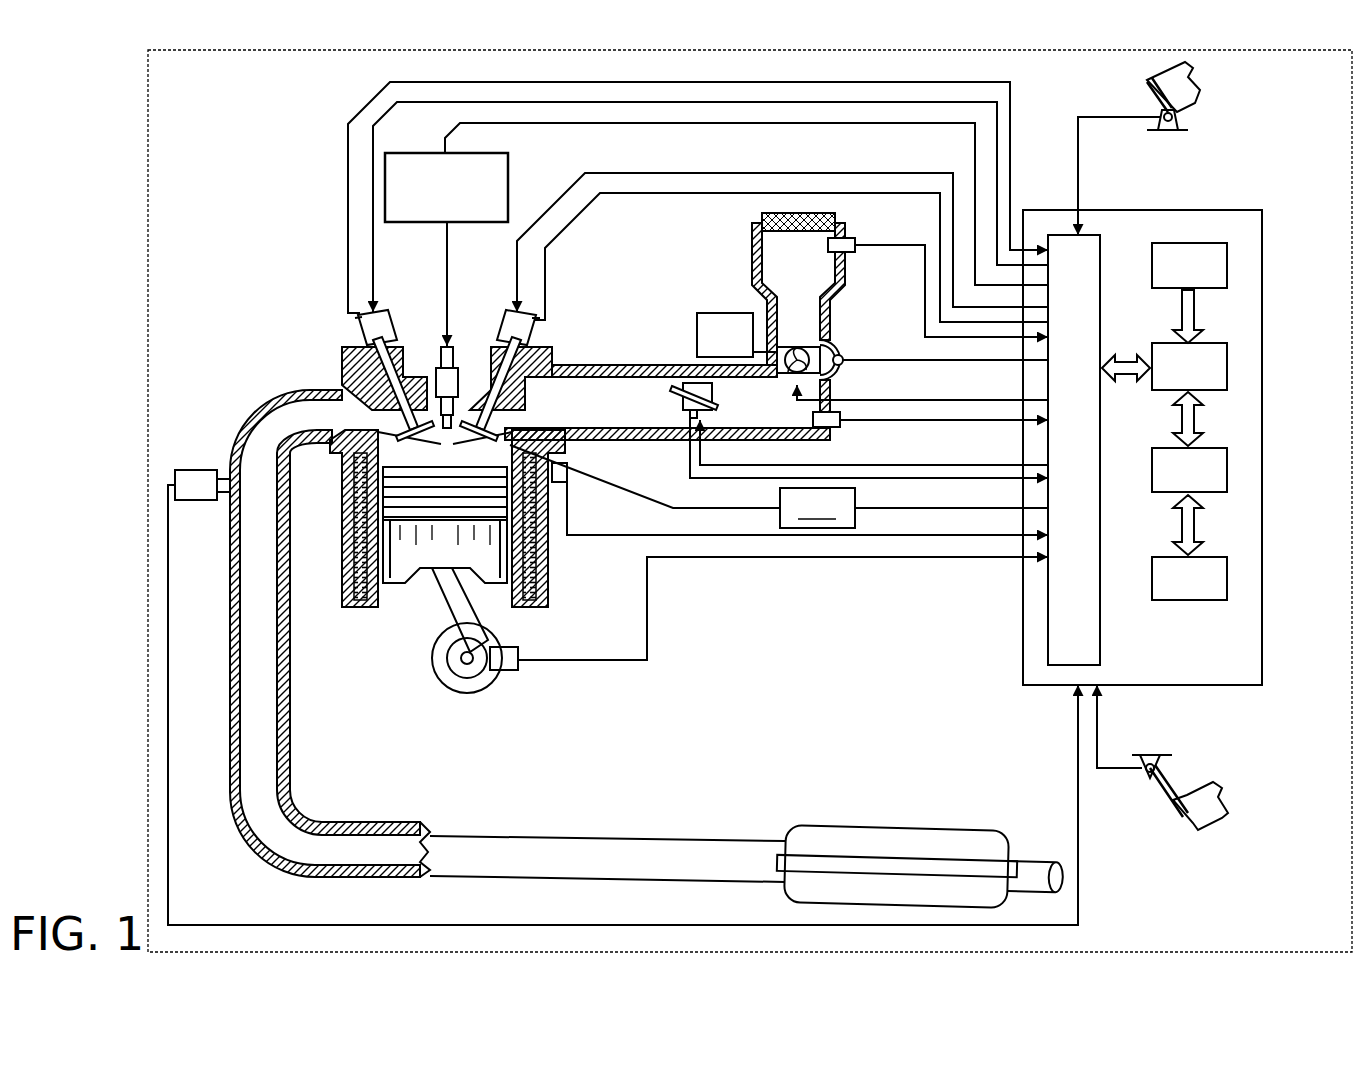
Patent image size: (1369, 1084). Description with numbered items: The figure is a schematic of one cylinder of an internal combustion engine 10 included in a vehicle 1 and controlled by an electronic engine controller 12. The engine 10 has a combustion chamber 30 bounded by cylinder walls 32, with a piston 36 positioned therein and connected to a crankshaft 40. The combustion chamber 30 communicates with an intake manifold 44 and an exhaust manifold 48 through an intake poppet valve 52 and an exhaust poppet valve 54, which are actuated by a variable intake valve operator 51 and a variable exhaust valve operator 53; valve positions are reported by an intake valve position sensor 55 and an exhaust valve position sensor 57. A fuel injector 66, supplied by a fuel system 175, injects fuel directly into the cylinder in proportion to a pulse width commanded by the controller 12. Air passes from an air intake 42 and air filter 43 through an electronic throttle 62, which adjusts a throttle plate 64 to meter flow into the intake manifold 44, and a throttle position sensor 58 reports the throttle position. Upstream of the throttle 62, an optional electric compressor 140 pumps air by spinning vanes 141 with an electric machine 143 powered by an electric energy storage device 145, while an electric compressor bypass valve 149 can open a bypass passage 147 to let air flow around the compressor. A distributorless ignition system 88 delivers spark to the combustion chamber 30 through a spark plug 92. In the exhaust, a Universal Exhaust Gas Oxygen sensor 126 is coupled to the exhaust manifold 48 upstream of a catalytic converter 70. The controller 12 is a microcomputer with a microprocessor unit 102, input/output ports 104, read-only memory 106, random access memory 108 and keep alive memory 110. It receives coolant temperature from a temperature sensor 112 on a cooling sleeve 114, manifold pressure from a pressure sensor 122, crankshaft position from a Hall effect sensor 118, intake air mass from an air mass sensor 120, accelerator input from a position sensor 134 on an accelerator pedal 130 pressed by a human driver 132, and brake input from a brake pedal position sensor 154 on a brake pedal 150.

The vehicle 1 is at (146, 524).
The internal combustion engine 10 is at (268, 294).
The electronic engine controller 12 is at (1251, 210).
The combustion chamber 30 is at (443, 450).
The cylinder walls 32 is at (386, 595).
The piston 36 is at (428, 555).
The crankshaft 40 is at (458, 680).
The air intake 42 is at (813, 274).
The air filter 43 is at (763, 213).
The intake manifold 44 is at (648, 414).
The exhaust manifold 48 is at (323, 422).
The variable intake valve operator 51 is at (512, 307).
The intake poppet valve 52 is at (537, 413).
The variable exhaust valve operator 53 is at (380, 310).
The exhaust poppet valve 54 is at (372, 402).
The intake valve position sensor 55 is at (531, 337).
The exhaust valve position sensor 57 is at (362, 330).
The throttle position sensor 58 is at (688, 414).
The electronic throttle 62 is at (702, 385).
The throttle plate 64 is at (716, 408).
The fuel injector 66 is at (578, 462).
The catalytic converter 70 is at (828, 830).
The distributorless ignition system 88 is at (398, 153).
The spark plug 92 is at (457, 358).
The microprocessor unit 102 is at (1228, 357).
The input/output ports 104 is at (1104, 243).
The read-only memory 106 is at (1228, 265).
The random access memory 108 is at (1228, 465).
The keep alive memory 110 is at (1228, 573).
The temperature sensor 112 is at (564, 482).
The cooling sleeve 114 is at (548, 560).
The Hall effect sensor 118 is at (517, 648).
The air mass sensor 120 is at (846, 237).
The pressure sensor 122 is at (838, 430).
The Universal Exhaust Gas Oxygen sensor 126 is at (196, 470).
The accelerator pedal 130 is at (1147, 95).
The human driver 132 is at (1195, 80).
The position sensor 134 is at (1178, 118).
The electric compressor 140 is at (901, 407).
The vanes 141 is at (792, 367).
The electric machine 143 is at (787, 347).
The electric energy storage device 145 is at (737, 335).
The bypass passage 147 is at (838, 342).
The electric compressor bypass valve 149 is at (843, 354).
The brake pedal 150 is at (1177, 815).
The brake pedal position sensor 154 is at (1142, 771).
The fuel system 175 is at (914, 508).